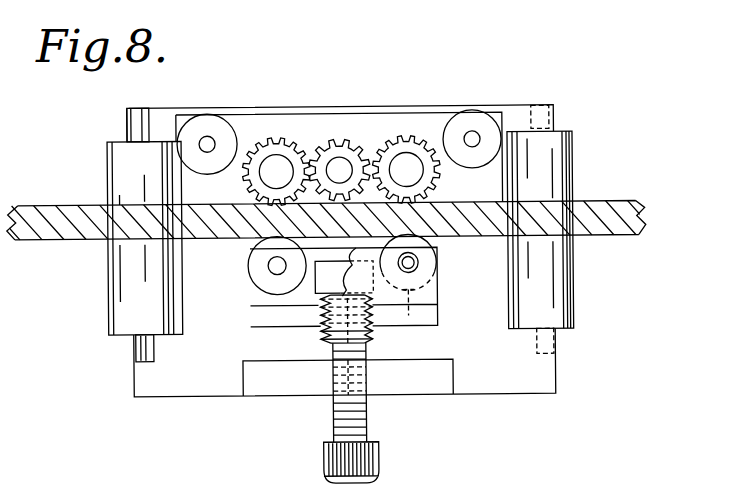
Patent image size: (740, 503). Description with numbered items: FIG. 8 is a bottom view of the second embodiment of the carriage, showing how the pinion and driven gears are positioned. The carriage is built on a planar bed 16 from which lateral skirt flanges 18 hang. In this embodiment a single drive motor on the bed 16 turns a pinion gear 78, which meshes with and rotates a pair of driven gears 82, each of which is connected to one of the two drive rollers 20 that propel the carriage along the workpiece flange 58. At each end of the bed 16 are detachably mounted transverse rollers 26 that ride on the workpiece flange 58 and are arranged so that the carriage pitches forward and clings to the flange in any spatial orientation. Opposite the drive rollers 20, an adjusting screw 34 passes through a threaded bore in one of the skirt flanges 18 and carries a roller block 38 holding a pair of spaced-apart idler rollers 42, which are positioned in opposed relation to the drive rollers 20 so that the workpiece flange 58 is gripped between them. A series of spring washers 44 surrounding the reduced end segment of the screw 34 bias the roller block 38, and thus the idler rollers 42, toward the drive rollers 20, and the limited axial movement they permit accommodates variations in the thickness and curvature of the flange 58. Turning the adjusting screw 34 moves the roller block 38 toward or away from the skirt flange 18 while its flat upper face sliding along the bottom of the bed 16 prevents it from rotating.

The planar bed 16 is at (150, 380).
The lateral skirt flanges 18 is at (415, 384).
The drive rollers 20 is at (283, 138).
The transverse rollers 26 is at (130, 162).
The adjusting screw 34 is at (365, 413).
The roller block 38 is at (251, 296).
The idler rollers 42 is at (281, 294).
The spring washers 44 is at (322, 340).
The workpiece flange 58 is at (610, 237).
The pinion gear 78 is at (345, 138).
The driven gears 82 is at (263, 140).